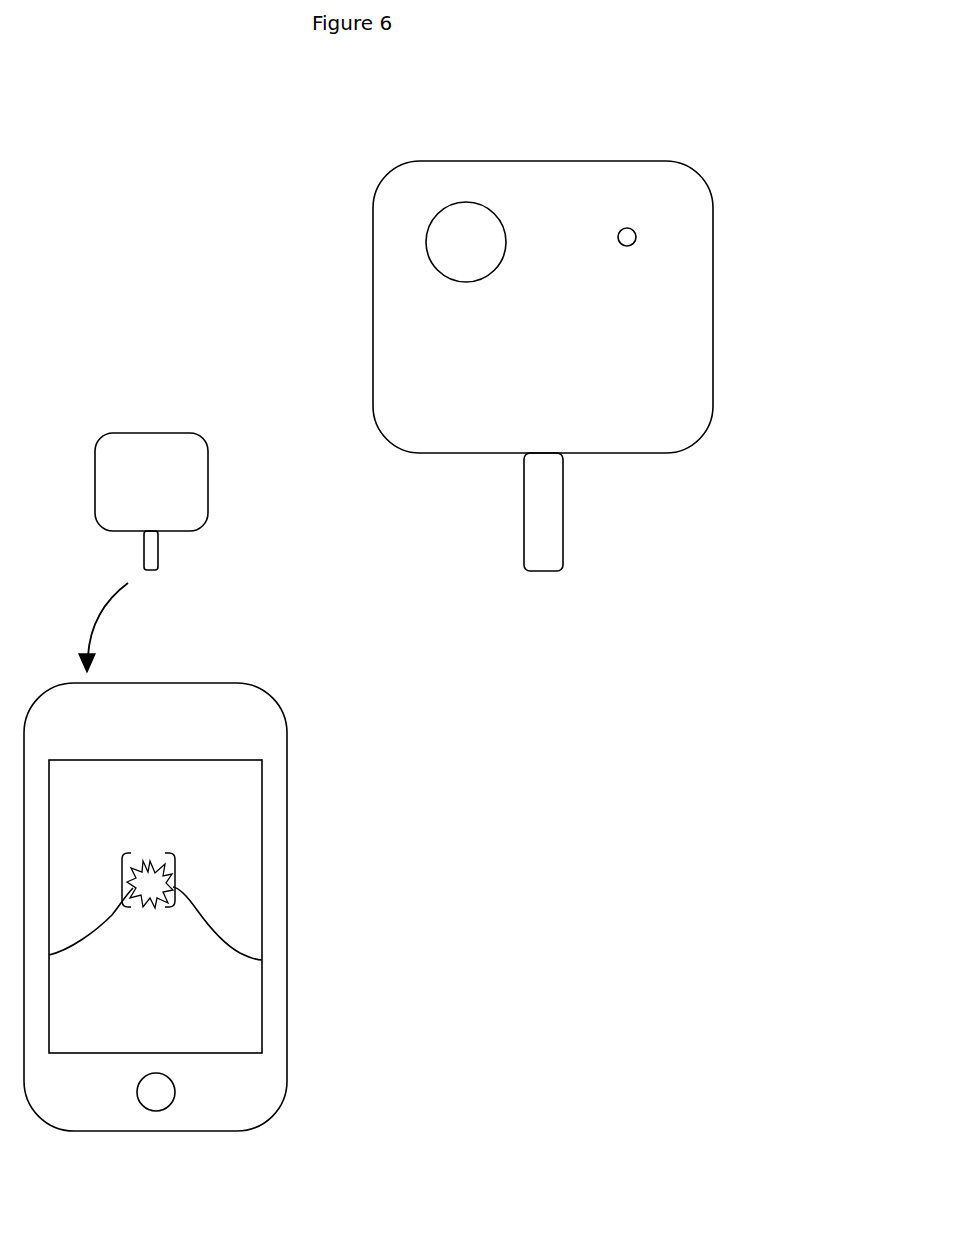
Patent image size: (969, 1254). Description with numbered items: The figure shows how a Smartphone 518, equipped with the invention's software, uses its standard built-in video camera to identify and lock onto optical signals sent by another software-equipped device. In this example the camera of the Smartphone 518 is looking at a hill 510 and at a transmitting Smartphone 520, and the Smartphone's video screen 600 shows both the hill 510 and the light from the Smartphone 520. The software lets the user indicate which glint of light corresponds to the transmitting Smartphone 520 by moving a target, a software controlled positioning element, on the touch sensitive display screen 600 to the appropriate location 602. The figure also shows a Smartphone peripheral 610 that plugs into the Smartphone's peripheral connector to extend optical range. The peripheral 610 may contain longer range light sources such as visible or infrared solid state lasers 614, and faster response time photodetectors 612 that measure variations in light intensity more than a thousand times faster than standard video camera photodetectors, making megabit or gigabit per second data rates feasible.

The hill 510 is at (157, 927).
The Smartphone 518 is at (305, 778).
The Smartphone 520 is at (143, 852).
The video screen 600 is at (228, 791).
The location 602 is at (188, 873).
The Smartphone peripheral 610 is at (360, 315).
The photodetectors 612 is at (418, 210).
The solid state lasers 614 is at (645, 224).